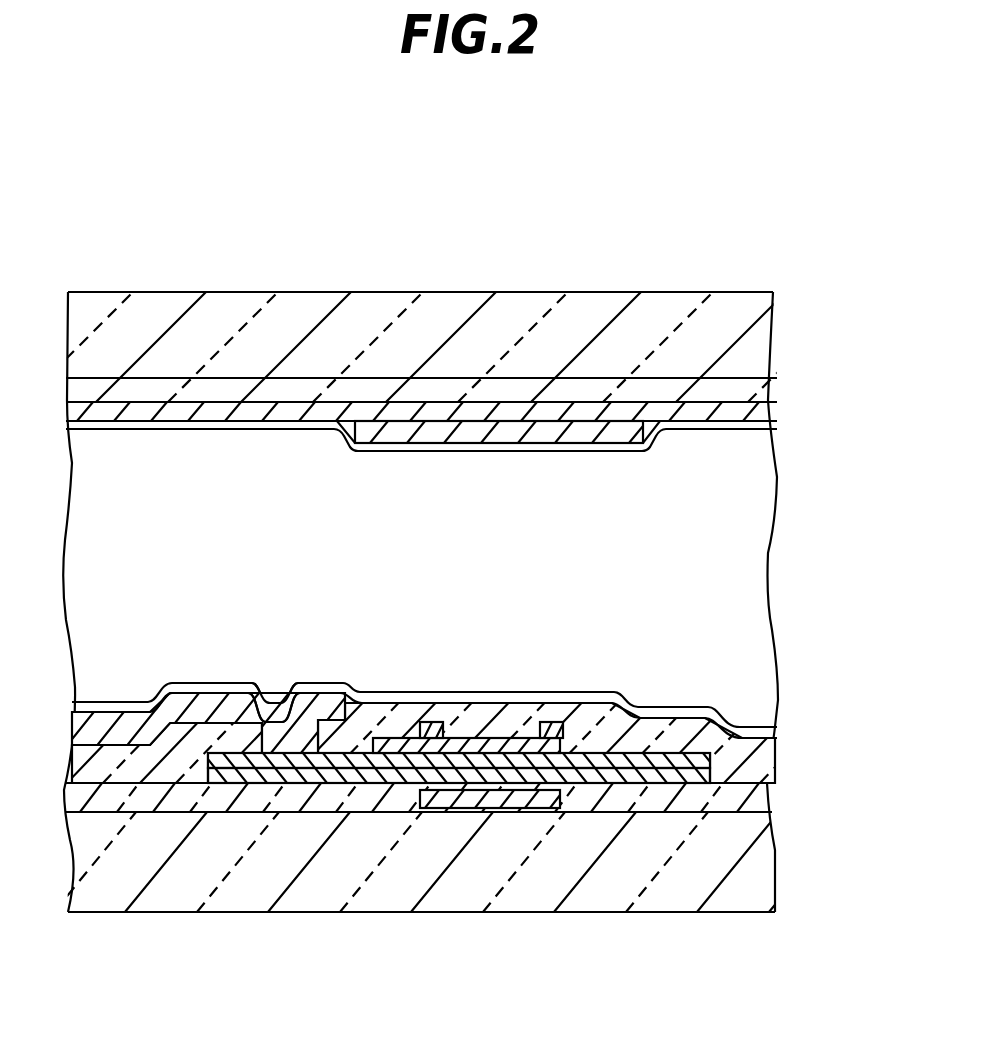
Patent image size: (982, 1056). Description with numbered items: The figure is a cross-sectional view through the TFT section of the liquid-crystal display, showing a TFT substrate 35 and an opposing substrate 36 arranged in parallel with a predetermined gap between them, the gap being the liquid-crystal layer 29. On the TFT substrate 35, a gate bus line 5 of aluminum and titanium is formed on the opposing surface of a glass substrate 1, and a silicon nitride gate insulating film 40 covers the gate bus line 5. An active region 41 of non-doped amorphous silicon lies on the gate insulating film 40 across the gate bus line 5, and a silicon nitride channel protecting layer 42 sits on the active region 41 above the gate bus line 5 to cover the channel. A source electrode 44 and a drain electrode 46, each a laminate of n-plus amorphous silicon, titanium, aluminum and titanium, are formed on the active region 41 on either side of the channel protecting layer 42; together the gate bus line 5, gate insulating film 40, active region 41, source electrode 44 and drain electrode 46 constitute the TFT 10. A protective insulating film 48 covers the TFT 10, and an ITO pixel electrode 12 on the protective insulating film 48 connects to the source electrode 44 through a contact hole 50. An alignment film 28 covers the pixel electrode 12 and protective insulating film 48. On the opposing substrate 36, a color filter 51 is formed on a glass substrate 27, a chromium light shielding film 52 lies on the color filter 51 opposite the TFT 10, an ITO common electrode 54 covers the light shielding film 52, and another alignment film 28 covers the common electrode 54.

The glass substrate 1 is at (770, 882).
The gate bus line 5 is at (465, 800).
The TFT 10 is at (529, 672).
The pixel electrode 12 is at (115, 722).
The glass substrate 27 is at (760, 338).
The alignment film 28 is at (772, 428).
The liquid crystal layer 29 is at (752, 553).
The TFT substrate 35 is at (795, 909).
The opposing substrate 36 is at (794, 288).
The gate insulating film 40 is at (762, 797).
The active region 41 is at (748, 770).
The channel protecting layer 42 is at (478, 748).
The source electrode 44 is at (278, 762).
The drain electrode 46 is at (742, 722).
The protective insulating film 48 is at (752, 746).
The contact hole 50 is at (265, 700).
The color filter 51 is at (757, 392).
The light shielding film 52 is at (513, 405).
The common electrode 54 is at (772, 410).